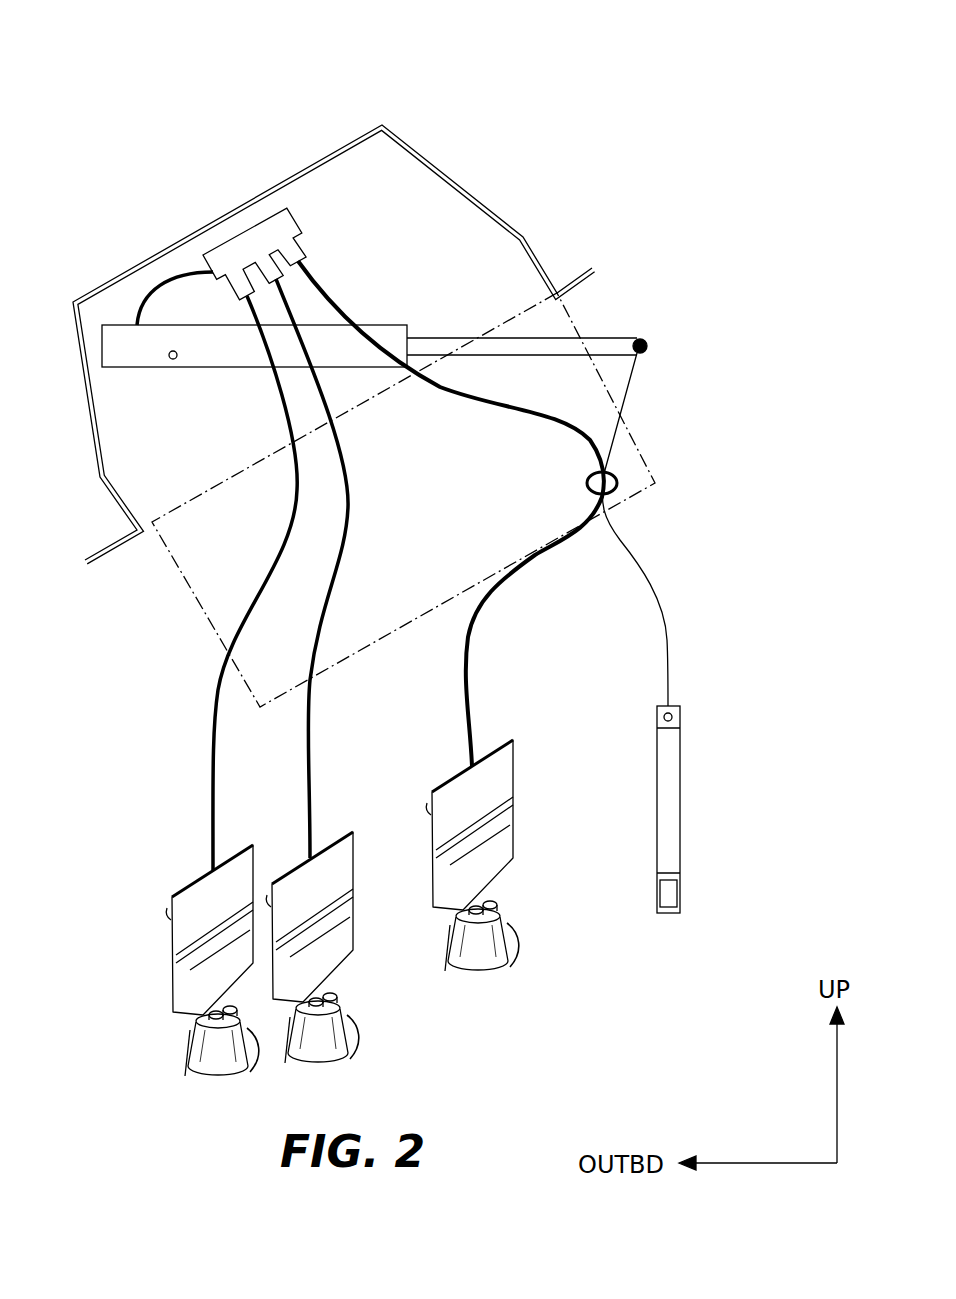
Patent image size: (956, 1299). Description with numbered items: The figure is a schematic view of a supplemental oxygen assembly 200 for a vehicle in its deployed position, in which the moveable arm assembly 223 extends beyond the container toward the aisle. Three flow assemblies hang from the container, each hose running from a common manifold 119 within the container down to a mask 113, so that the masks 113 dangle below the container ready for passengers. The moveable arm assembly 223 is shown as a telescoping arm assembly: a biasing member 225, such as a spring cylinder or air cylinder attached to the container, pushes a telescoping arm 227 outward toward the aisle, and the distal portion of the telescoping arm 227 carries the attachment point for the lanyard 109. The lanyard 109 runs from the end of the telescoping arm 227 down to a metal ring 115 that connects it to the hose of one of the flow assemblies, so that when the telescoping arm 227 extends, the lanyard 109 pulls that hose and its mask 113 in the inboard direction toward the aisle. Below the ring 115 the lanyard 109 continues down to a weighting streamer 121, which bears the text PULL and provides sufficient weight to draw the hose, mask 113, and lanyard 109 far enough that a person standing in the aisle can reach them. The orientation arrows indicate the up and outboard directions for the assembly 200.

The supplemental oxygen assembly 200 is at (372, 46).
The moveable arm assembly 223 is at (405, 294).
The biasing member 225 is at (193, 371).
The telescoping arm 227 is at (608, 338).
The manifold 119 is at (240, 232).
The mask 113 is at (168, 918).
The metal ring 115 is at (623, 483).
The lanyard 109 is at (668, 608).
The weighting streamer 121 is at (685, 812).